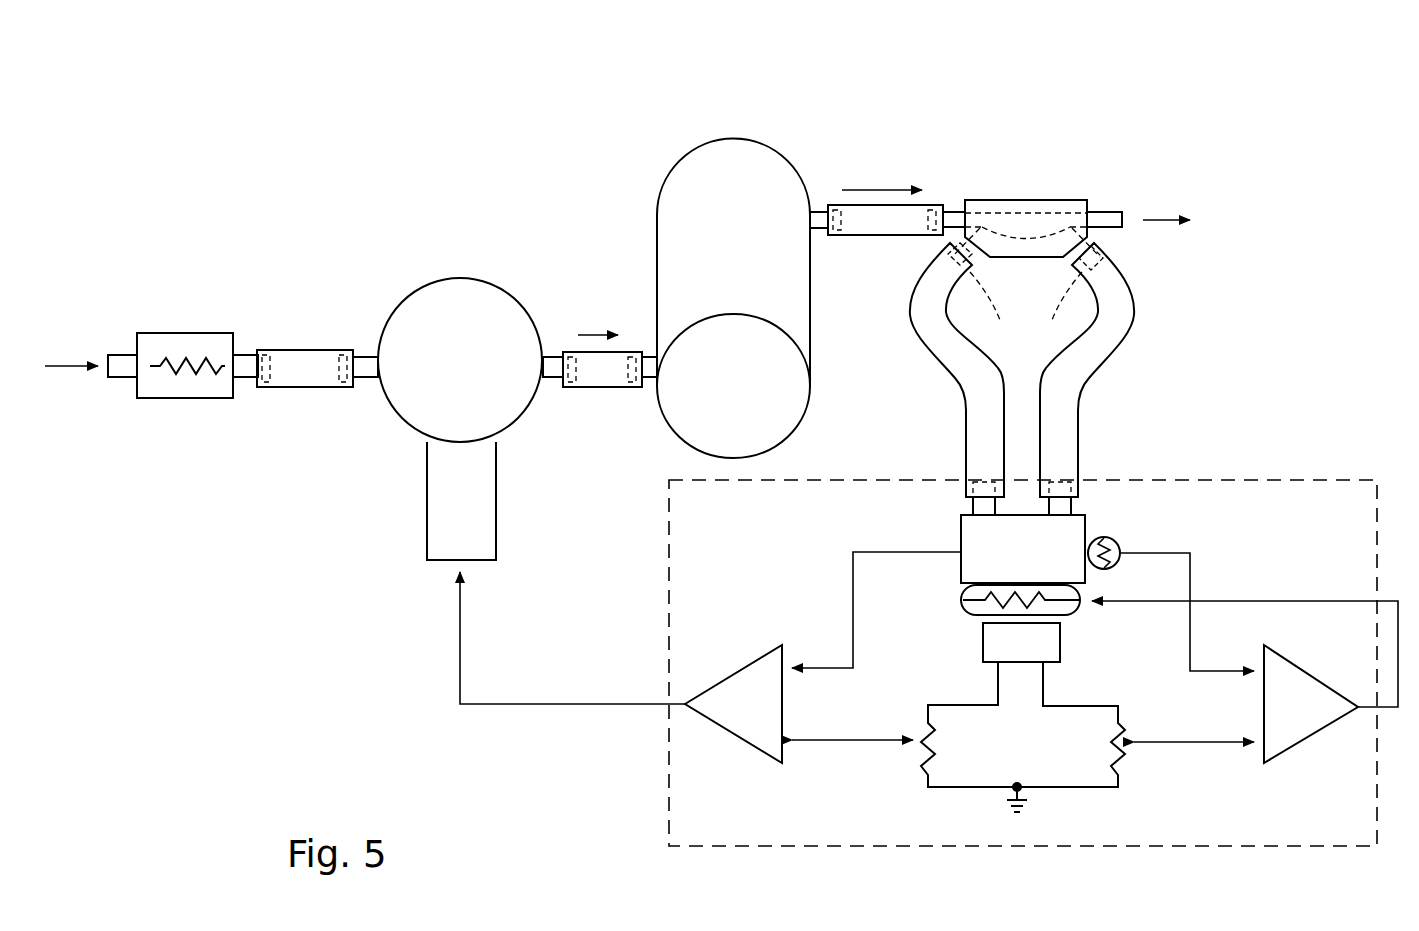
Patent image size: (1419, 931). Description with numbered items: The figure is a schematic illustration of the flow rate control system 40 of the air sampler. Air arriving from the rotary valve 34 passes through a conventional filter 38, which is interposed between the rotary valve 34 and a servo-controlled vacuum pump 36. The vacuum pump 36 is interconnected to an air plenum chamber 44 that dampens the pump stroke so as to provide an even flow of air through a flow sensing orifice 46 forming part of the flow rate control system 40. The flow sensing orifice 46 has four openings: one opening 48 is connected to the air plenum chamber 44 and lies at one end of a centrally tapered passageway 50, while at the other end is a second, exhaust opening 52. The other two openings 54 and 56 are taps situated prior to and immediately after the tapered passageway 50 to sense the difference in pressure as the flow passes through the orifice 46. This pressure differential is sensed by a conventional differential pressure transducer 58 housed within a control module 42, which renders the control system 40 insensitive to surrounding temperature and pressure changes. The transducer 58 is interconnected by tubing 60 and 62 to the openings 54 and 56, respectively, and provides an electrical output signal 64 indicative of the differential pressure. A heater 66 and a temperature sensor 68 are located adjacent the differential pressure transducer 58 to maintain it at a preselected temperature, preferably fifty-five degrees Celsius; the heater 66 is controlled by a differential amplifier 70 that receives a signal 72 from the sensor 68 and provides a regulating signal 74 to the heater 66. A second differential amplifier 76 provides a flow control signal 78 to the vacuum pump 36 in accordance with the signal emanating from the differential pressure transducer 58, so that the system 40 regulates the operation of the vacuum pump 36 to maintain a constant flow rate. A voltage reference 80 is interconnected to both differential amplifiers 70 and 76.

The rotary valve 34 is at (78, 368).
The vacuum pump 36 is at (528, 302).
The filter 38 is at (239, 339).
The flow rate control system 40 is at (1246, 391).
The control module 42 is at (1382, 502).
The air plenum chamber 44 is at (1150, 192).
The flow sensing orifice 46 is at (1083, 196).
The opening 48 is at (940, 222).
The centrally tapered passageway 50 is at (1038, 218).
The exhaust opening 52 is at (1122, 227).
The tap opening 54 is at (979, 285).
The tap opening 56 is at (1071, 285).
The differential pressure transducer 58 is at (1085, 520).
The tubing 60 is at (960, 364).
The tubing 62 is at (1097, 362).
The electrical output signal 64 is at (873, 550).
The heater 66 is at (1075, 613).
The temperature sensor 68 is at (1120, 545).
The differential amplifier 70 is at (1325, 733).
The signal 72 is at (1190, 575).
The regulating signal 74 is at (1398, 648).
The differential amplifier 76 is at (713, 730).
The flow control signal 78 is at (573, 700).
The voltage reference 80 is at (1060, 650).